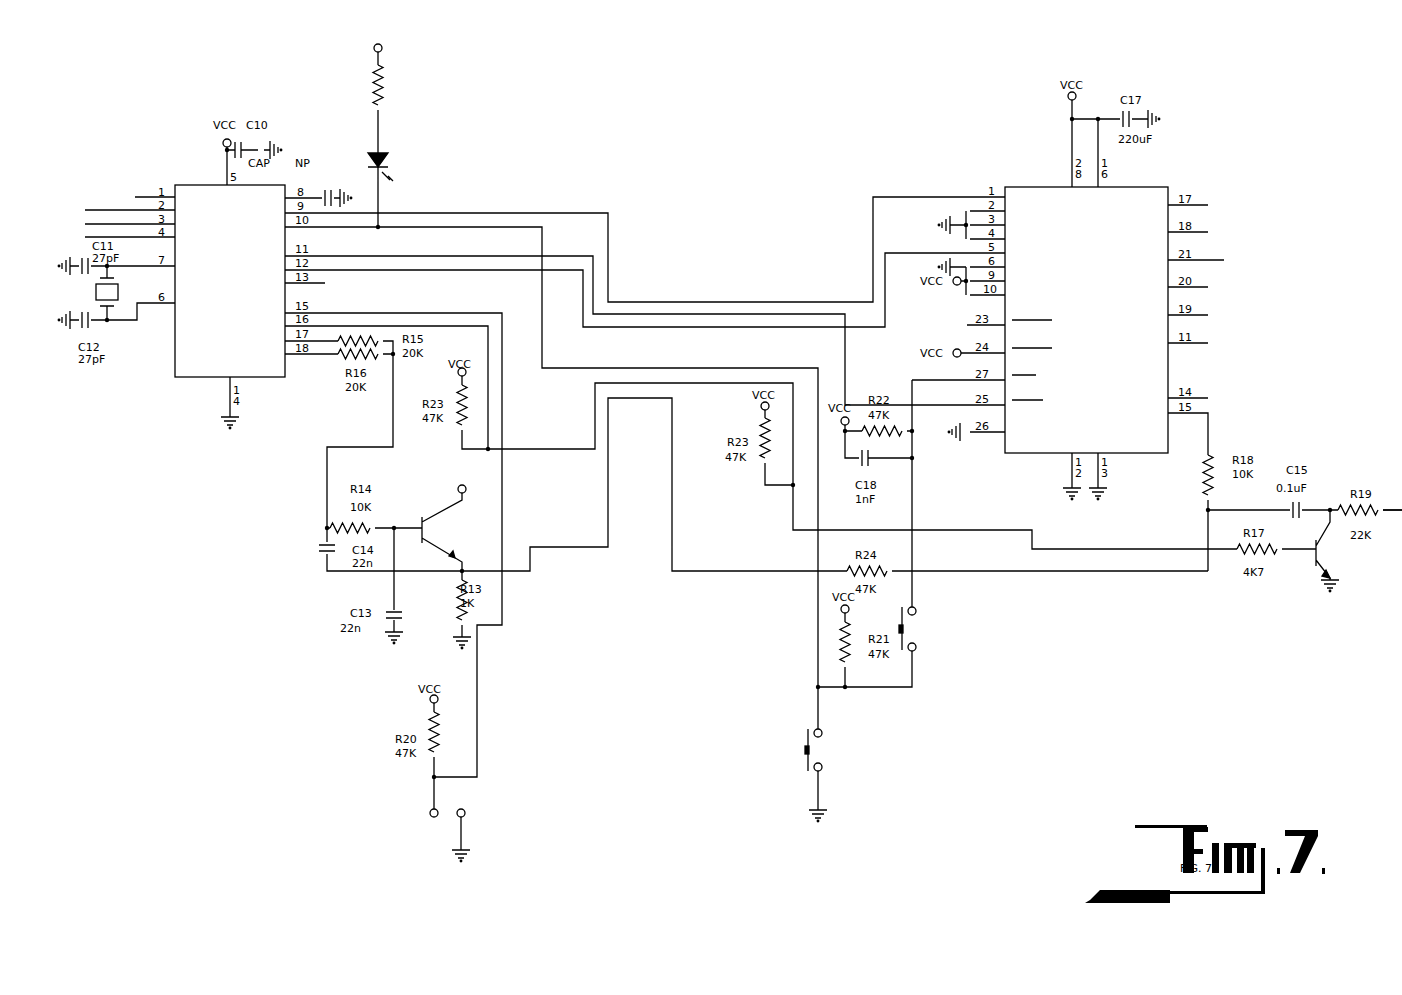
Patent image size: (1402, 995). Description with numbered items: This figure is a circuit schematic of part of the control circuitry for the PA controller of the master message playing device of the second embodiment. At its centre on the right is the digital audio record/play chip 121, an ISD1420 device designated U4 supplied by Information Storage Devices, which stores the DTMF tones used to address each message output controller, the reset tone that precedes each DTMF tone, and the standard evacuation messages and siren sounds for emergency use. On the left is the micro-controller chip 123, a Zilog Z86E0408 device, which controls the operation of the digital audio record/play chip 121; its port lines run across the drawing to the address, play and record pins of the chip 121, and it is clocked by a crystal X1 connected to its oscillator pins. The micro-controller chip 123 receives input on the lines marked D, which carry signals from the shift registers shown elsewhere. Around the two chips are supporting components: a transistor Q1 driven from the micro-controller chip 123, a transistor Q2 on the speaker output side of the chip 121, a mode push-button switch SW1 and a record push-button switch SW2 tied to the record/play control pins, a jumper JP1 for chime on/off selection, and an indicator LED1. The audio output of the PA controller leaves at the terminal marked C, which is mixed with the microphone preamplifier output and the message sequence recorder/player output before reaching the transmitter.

The digital audio record/play chip 121 is at (1225, 253).
The micro-controller chip 123 is at (197, 385).
The ISD1420 digital audio record/play chip U4 is at (1070, 298).
The transistor BC548 Q1 is at (452, 524).
The transistor BC548 Q2 is at (1313, 560).
The mode switch SW1 is at (837, 754).
The record switch SW2 is at (896, 647).
The chime on/off jumper JP1 is at (378, 835).
The LED LED1 is at (398, 130).
The crystal 3.58 MHz X1 is at (124, 302).
The connection D is at (118, 216).
The output C is at (1390, 537).